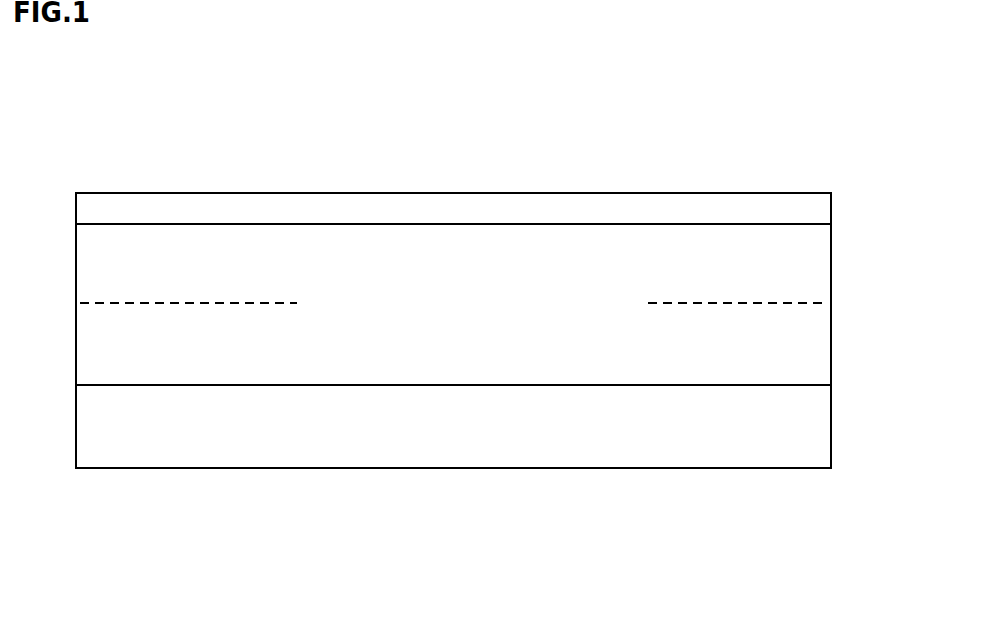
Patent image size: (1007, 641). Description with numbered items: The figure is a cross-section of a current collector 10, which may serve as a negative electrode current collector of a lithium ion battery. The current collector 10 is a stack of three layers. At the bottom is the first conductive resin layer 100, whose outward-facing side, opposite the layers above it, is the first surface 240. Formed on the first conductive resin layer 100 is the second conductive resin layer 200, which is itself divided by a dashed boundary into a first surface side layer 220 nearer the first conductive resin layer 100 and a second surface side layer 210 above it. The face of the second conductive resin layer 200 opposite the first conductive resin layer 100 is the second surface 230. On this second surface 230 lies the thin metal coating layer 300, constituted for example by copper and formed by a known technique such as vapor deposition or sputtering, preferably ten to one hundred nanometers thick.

The current collector 10 is at (454, 378).
The first conductive resin layer 100 is at (818, 437).
The second conductive resin layer 200 is at (846, 302).
The second surface side layer 210 is at (88, 272).
The first surface side layer 220 is at (88, 353).
The second surface 230 is at (152, 223).
The first surface 240 is at (147, 470).
The metal coating layer 300 is at (818, 213).